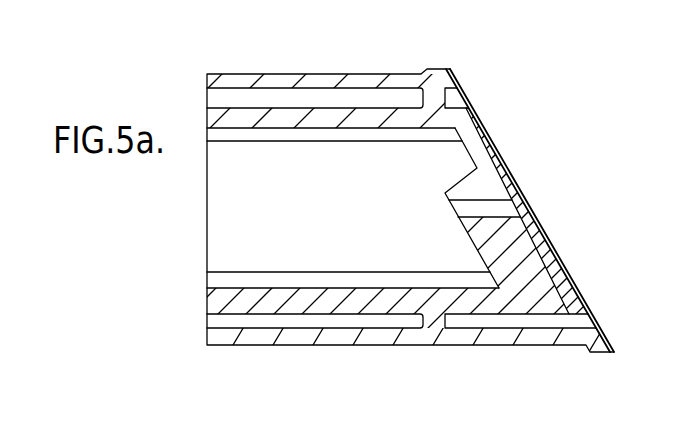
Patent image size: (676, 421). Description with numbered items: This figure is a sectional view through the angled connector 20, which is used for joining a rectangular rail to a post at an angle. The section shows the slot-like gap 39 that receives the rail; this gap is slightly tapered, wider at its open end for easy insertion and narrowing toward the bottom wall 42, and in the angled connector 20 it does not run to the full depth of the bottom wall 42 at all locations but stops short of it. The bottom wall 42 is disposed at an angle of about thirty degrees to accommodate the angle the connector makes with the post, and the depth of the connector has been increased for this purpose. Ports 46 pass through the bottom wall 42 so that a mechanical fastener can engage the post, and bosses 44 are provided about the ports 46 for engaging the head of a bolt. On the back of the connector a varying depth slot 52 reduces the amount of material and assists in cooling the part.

The angled connector 20 is at (373, 67).
The slot-like gap 39 is at (222, 100).
The bottom wall 42 is at (513, 178).
The bosses 44 is at (447, 191).
The ports 46 is at (518, 222).
The varying depth slot 52 is at (540, 322).